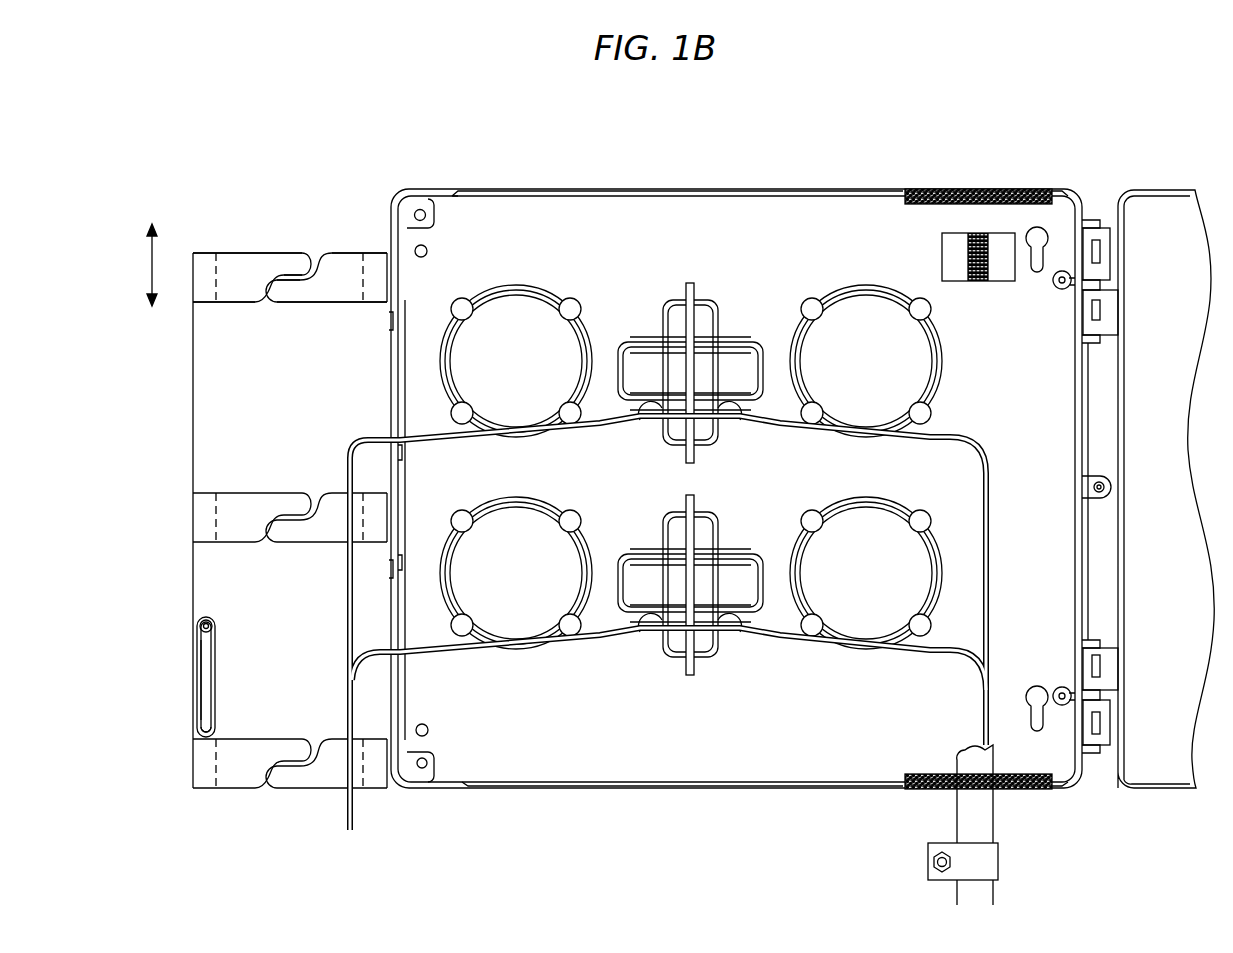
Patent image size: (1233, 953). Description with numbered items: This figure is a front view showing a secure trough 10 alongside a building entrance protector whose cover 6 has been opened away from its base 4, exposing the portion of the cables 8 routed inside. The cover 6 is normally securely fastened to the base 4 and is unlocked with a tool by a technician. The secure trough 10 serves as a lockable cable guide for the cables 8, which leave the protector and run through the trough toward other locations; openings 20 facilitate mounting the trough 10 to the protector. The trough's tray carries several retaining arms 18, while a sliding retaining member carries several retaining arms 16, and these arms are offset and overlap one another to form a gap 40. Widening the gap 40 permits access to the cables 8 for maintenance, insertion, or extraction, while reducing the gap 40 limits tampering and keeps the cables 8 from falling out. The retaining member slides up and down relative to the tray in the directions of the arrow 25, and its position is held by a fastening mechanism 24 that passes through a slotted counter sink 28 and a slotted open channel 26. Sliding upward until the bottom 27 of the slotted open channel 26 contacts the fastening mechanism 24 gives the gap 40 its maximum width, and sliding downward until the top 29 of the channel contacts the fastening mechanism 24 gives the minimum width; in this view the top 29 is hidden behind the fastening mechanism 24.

The base 4 is at (858, 189).
The cover 6 is at (1162, 190).
The cables 8 is at (599, 427).
The secure trough 10 is at (288, 238).
The retaining arms 16 is at (236, 303).
The retaining arms 18 is at (341, 252).
The openings 20 is at (385, 320).
The fastening mechanism 24 is at (200, 626).
The arrow 25 is at (148, 262).
The slotted open channel 26 is at (200, 657).
The bottom of slotted open channel 27 is at (200, 722).
The slotted counter sink 28 is at (200, 694).
The top of slotted open channel 29 is at (204, 618).
The gap 40 is at (290, 278).